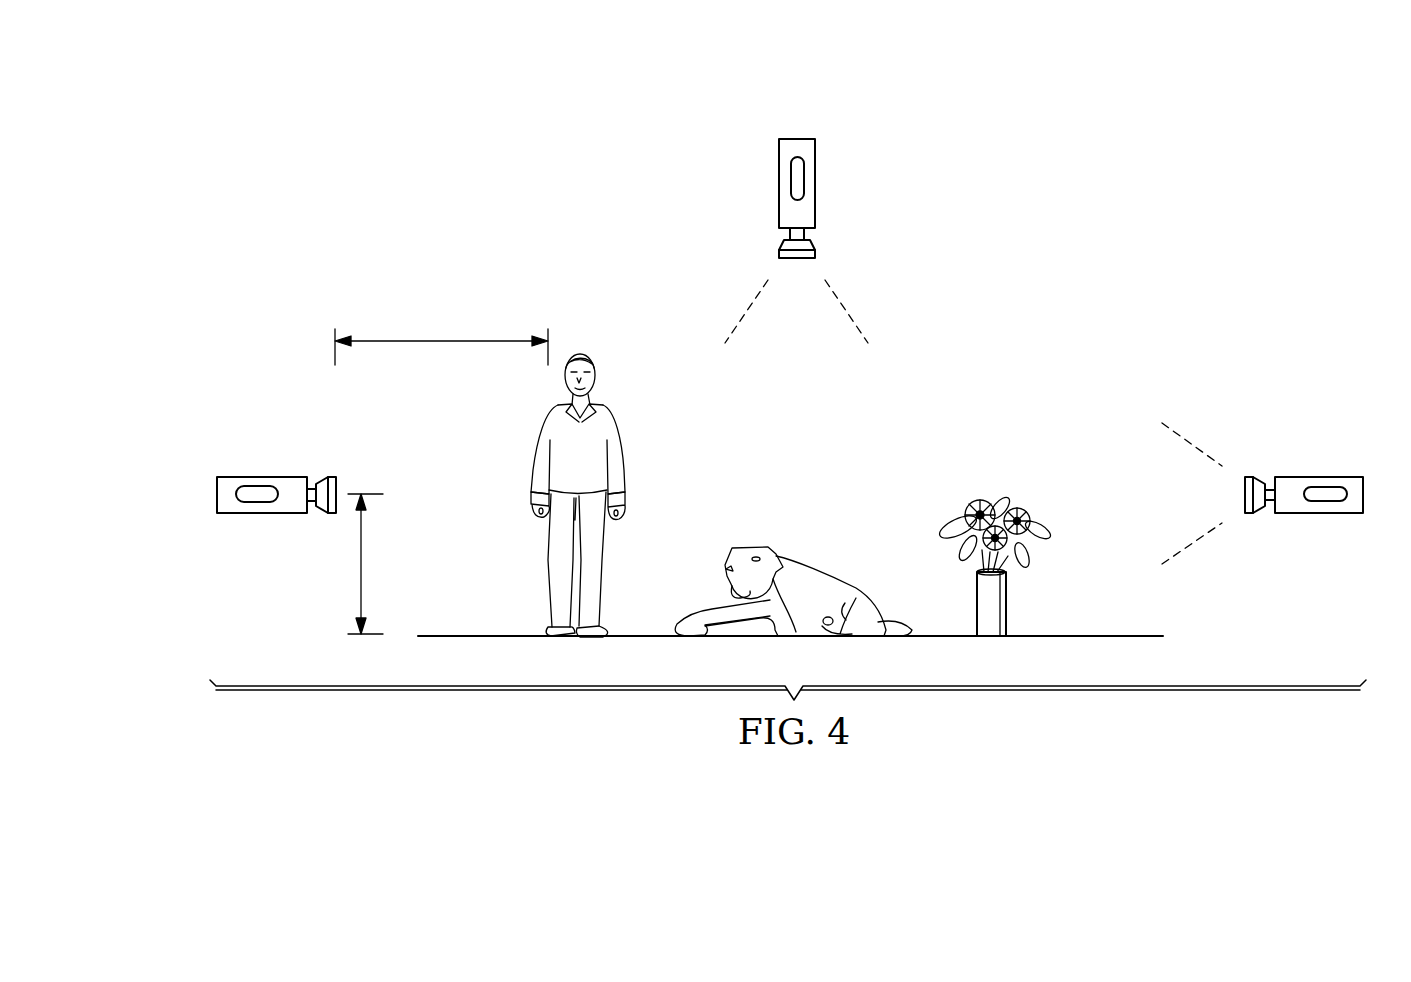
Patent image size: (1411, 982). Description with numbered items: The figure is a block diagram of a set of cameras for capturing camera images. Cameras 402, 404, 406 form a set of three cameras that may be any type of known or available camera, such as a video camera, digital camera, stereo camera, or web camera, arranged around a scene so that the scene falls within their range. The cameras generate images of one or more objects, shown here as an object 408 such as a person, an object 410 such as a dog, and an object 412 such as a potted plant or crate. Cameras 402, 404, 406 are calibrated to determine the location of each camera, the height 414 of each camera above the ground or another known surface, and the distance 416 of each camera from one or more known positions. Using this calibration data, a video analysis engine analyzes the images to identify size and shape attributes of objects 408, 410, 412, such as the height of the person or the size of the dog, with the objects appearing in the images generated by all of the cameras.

The camera 402 is at (790, 138).
The camera 404 is at (262, 476).
The camera 406 is at (1318, 514).
The object 408 is at (625, 447).
The object 410 is at (810, 572).
The object 412 is at (1007, 612).
The height 414 is at (356, 566).
The distance 416 is at (443, 340).